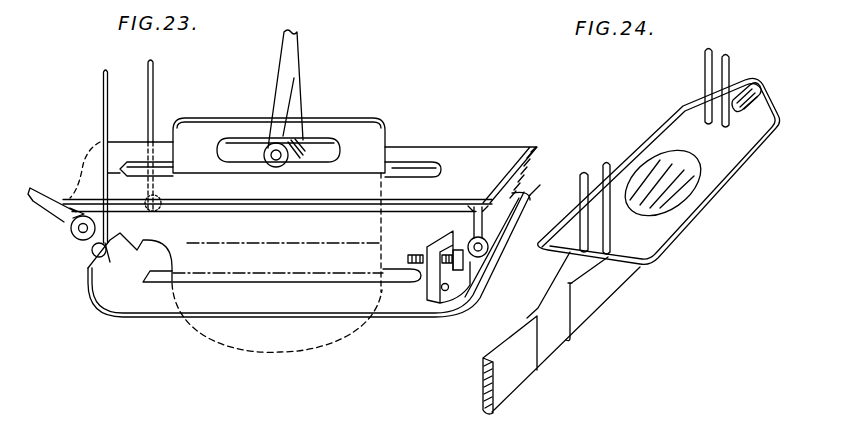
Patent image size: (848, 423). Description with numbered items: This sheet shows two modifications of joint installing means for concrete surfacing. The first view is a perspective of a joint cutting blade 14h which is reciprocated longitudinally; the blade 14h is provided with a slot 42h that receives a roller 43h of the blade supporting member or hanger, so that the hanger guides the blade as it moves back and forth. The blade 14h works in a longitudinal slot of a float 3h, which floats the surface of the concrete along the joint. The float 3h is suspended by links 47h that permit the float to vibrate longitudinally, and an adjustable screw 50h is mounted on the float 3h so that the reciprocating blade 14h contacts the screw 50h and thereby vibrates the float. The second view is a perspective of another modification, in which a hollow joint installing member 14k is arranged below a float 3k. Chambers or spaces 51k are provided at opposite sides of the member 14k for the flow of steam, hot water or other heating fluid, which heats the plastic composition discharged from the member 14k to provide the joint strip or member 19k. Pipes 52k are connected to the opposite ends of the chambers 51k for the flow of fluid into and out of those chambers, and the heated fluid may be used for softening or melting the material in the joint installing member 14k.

In FIG. 23, the float 3h is at (160, 308).
In FIG. 23, the joint cutting blade 14h is at (364, 120).
In FIG. 23, the slot 42h is at (235, 140).
In FIG. 23, the roller 43h is at (292, 134).
In FIG. 23, the links 47h is at (152, 116).
In FIG. 23, the adjustable screw 50h is at (412, 255).
In FIG. 24, the float 3k is at (664, 232).
In FIG. 24, the hollow joint installing member 14k is at (677, 160).
In FIG. 24, the joint strip 19k is at (492, 357).
In FIG. 24, the chambers 51k is at (660, 178).
In FIG. 24, the pipes 52k is at (722, 88).